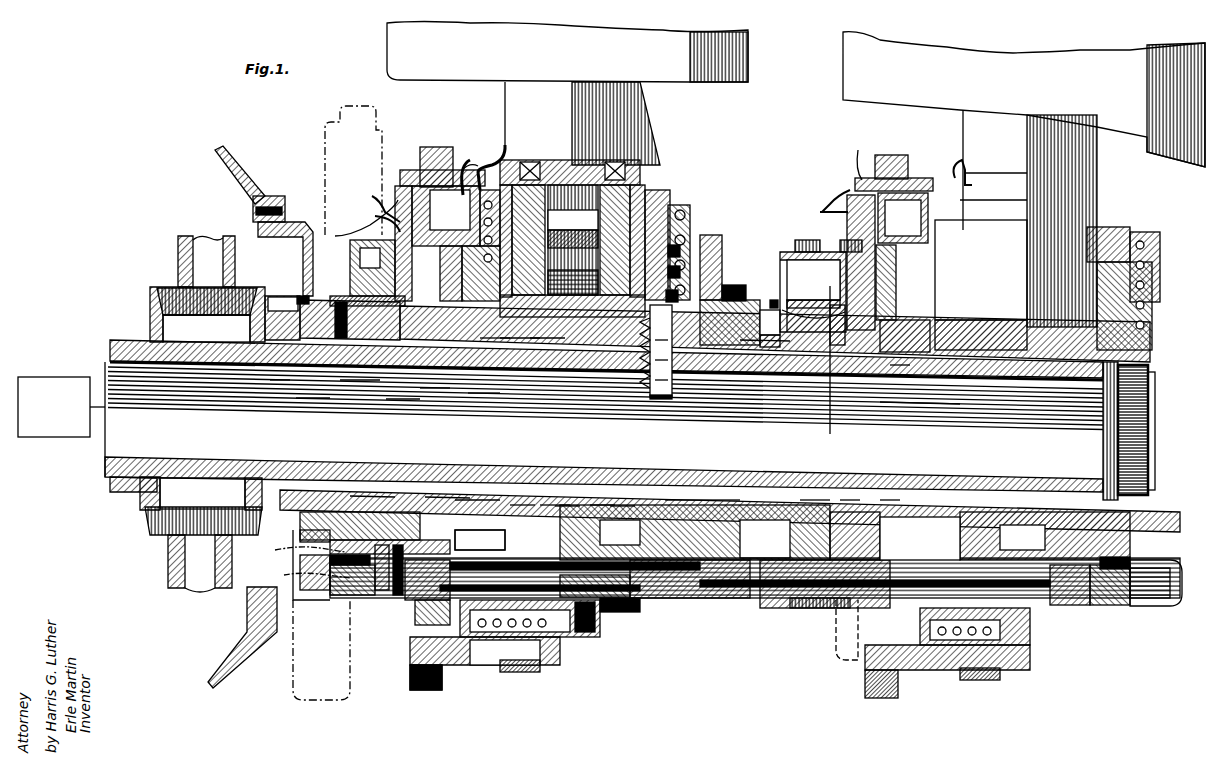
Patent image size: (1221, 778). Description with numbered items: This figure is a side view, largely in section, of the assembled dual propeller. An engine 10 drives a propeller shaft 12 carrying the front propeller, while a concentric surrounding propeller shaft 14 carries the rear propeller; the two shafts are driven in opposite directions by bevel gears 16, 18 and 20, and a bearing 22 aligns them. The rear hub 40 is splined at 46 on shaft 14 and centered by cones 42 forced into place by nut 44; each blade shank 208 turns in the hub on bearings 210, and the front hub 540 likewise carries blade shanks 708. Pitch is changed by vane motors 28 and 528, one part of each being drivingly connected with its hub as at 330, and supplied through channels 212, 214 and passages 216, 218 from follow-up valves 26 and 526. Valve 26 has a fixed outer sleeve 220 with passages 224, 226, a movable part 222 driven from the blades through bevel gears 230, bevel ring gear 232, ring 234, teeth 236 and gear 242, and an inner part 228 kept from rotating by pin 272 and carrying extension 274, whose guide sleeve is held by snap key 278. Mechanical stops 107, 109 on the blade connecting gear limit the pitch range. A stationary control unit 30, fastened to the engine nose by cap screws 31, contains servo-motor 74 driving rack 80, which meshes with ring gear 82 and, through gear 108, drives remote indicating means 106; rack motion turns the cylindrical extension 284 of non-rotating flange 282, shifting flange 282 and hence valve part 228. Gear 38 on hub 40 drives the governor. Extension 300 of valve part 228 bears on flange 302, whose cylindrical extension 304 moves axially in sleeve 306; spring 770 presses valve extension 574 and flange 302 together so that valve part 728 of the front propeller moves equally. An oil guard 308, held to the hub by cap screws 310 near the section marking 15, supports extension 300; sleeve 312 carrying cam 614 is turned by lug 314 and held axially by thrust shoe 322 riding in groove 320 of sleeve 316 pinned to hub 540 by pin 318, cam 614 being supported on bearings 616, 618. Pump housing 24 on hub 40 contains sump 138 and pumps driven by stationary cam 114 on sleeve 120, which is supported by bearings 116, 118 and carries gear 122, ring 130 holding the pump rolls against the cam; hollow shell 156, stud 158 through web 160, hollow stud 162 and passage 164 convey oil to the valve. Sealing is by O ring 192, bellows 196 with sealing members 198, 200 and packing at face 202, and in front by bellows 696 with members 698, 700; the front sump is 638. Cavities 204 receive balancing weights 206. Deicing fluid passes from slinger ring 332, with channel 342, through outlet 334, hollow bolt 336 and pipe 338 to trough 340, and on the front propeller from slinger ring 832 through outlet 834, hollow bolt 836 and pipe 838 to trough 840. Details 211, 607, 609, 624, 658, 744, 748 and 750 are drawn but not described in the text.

The engine 10 is at (66, 378).
The propeller shaft 12 is at (106, 466).
The propeller shaft 14 is at (245, 496).
The section line 15 is at (830, 286).
The bevel gear 16 is at (150, 305).
The bevel gears 18 is at (207, 286).
The bevel gear 20 is at (272, 306).
The bearing 22 is at (604, 419).
The pump housing 24 is at (440, 147).
The control valve 26 is at (610, 598).
The pitch changing motor 28 is at (640, 185).
The control unit 30 is at (298, 222).
The cap screws 31 is at (262, 196).
The gear 38 is at (300, 533).
The hub 40 is at (670, 200).
The cones 42 is at (595, 360).
The nut 44 is at (650, 375).
The spline 46 is at (448, 340).
The servo-motor 74 is at (455, 540).
The rack 80 is at (302, 575).
The ring gear 82 is at (293, 547).
The remote indicating means 106 is at (330, 648).
The mechanical stop 107 is at (672, 500).
The gear 108 is at (300, 560).
The mechanical stop 109 is at (690, 500).
The cam 114 is at (500, 342).
The bearing 116 is at (420, 342).
The bearing 118 is at (320, 340).
The sleeve 120 is at (365, 340).
The gear 122 is at (360, 285).
The ring 130 is at (450, 252).
The sump 138 is at (446, 216).
The hollow shell 156 is at (415, 625).
The stud 158 is at (585, 635).
The web 160 is at (565, 638).
The hollow stud 162 is at (415, 610).
The passage 164 is at (600, 612).
The O ring packing 192 is at (465, 265).
The bellows 196 is at (375, 216).
The sealing member 198 is at (380, 590).
The sealing member 200 is at (350, 565).
The face 202 is at (330, 660).
The cavities 204 is at (412, 672).
The balancing weights 206 is at (442, 682).
The blade shank 208 is at (640, 114).
The bearings 210 is at (680, 210).
The spline 211 is at (552, 245).
The channel 212 is at (495, 345).
The channel 214 is at (547, 345).
The passage 216 is at (520, 505).
The passage 218 is at (565, 505).
The outer sleeve 220 is at (680, 600).
The valve part 222 is at (655, 598).
The passage 224 is at (555, 505).
The passage 226 is at (620, 505).
The valve part 228 is at (600, 505).
The bevel gear 230 is at (676, 252).
The bevel ring gear 232 is at (660, 398).
The ring 234 is at (676, 272).
The teeth 236 is at (676, 295).
The gear 242 is at (712, 500).
The pin 272 is at (372, 488).
The extension 274 is at (477, 491).
The snap key 278 is at (448, 665).
The flanged member 282 is at (424, 490).
The cylindrical extension 284 is at (350, 300).
The extension 300 is at (765, 608).
The flange 302 is at (815, 608).
The cylindrical extension 304 is at (765, 310).
The sleeve 306 is at (845, 362).
The oil guard 308 is at (765, 296).
The cap screws 310 is at (735, 285).
The sleeve 312 is at (895, 365).
The lug 314 is at (813, 303).
The sleeve 316 is at (850, 500).
The pin 318 is at (765, 341).
The groove 320 is at (840, 315).
The thrust shoe 322 is at (890, 500).
The driving connection 330 is at (519, 386).
The slinger ring 332 is at (372, 196).
The outlet 334 is at (400, 190).
The hollow bolt 336 is at (422, 170).
The pipe 338 is at (470, 160).
The trough 340 is at (506, 130).
The annular channel 342 is at (449, 213).
The control valve 526 is at (1080, 605).
The pitch changing motor 528 is at (1100, 227).
The hub 540 is at (1125, 232).
The valve extension 574 is at (900, 562).
The end plate 607 is at (1103, 478).
The end cap 609 is at (1148, 490).
The cam 614 is at (895, 360).
The bearing 616 is at (905, 322).
The bearing 618 is at (890, 320).
The block 624 is at (900, 155).
The sump 638 is at (903, 218).
The block 658 is at (1040, 648).
The bellows 696 is at (798, 250).
The sealing member 698 is at (805, 240).
The sealing member 700 is at (848, 245).
The blade shank 708 is at (1092, 157).
The valve part 728 is at (1050, 640).
The shaft end 744 is at (1140, 566).
The ring 748 is at (447, 488).
The collar 750 is at (1120, 557).
The spring 770 is at (1110, 605).
The slinger ring 832 is at (845, 196).
The outlet 834 is at (840, 190).
The hollow bolt 836 is at (855, 154).
The pipe 838 is at (972, 185).
The trough 840 is at (962, 160).